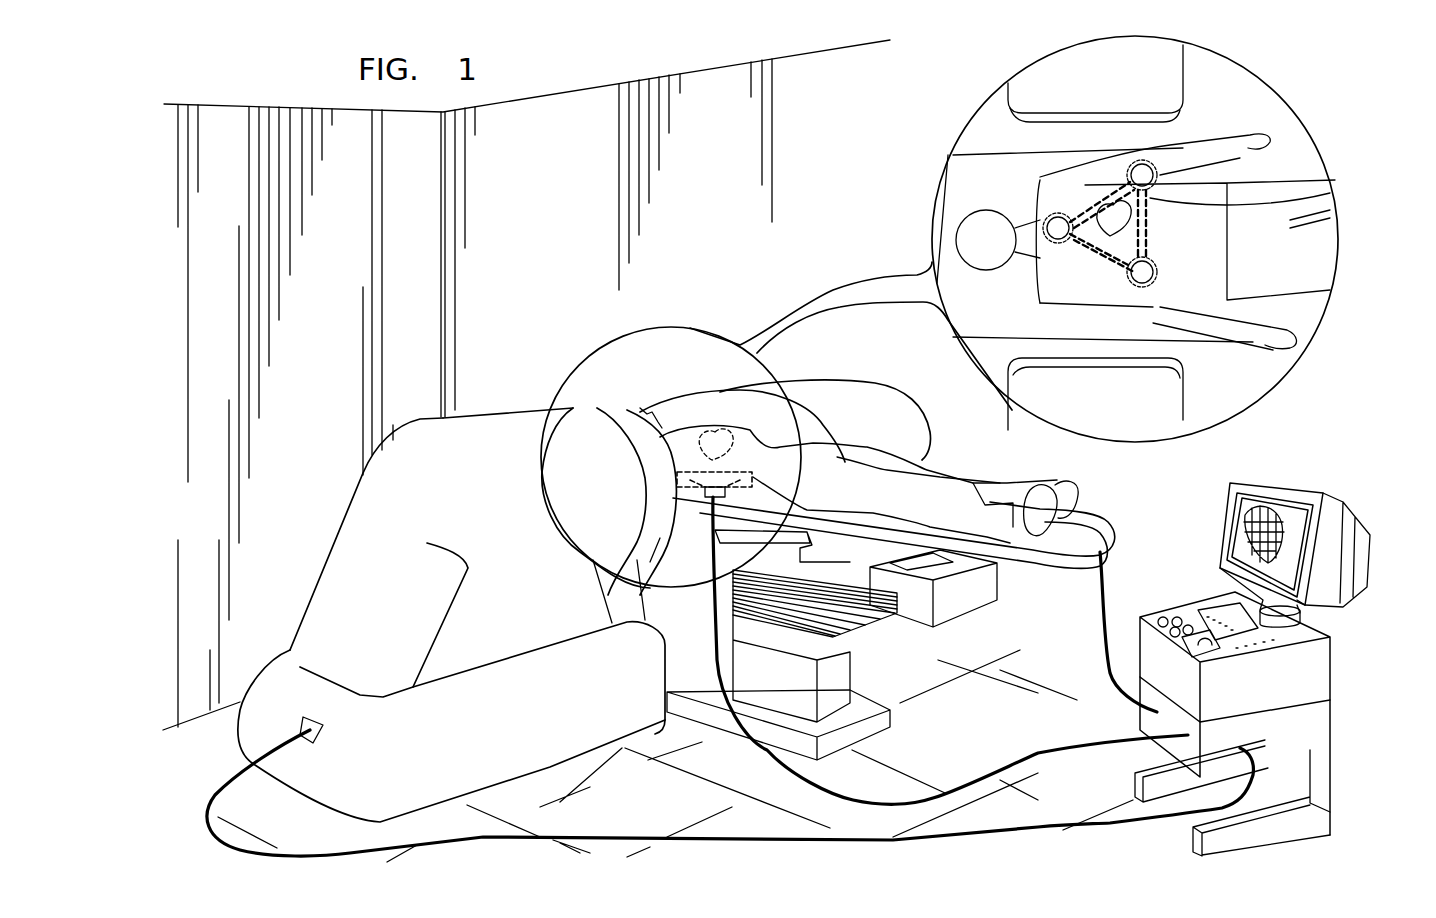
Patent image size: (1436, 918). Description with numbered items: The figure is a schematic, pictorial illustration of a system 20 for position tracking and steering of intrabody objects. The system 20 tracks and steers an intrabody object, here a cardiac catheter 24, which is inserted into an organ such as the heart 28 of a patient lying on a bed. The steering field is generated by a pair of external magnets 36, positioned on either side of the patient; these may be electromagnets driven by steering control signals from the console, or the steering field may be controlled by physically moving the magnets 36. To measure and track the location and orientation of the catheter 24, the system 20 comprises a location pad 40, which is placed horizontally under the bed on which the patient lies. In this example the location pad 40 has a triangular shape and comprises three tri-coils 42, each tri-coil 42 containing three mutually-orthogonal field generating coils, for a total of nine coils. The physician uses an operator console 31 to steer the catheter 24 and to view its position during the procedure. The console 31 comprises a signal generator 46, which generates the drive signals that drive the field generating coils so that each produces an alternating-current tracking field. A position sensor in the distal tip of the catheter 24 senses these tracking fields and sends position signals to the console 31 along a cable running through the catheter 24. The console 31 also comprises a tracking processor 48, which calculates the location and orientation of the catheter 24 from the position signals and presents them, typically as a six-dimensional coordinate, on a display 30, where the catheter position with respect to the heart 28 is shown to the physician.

The system for position tracking and steering of intrabody objects 20 is at (601, 242).
The cardiac catheter 24 is at (1100, 618).
The heart 28 is at (710, 430).
The display 30 is at (1257, 503).
The operator console 31 is at (1273, 724).
The external magnets 36 is at (467, 427).
The location pad 40 is at (697, 513).
The tri-coils 42 is at (1175, 153).
The signal generator 46 is at (1292, 732).
The tracking processor 48 is at (1287, 678).